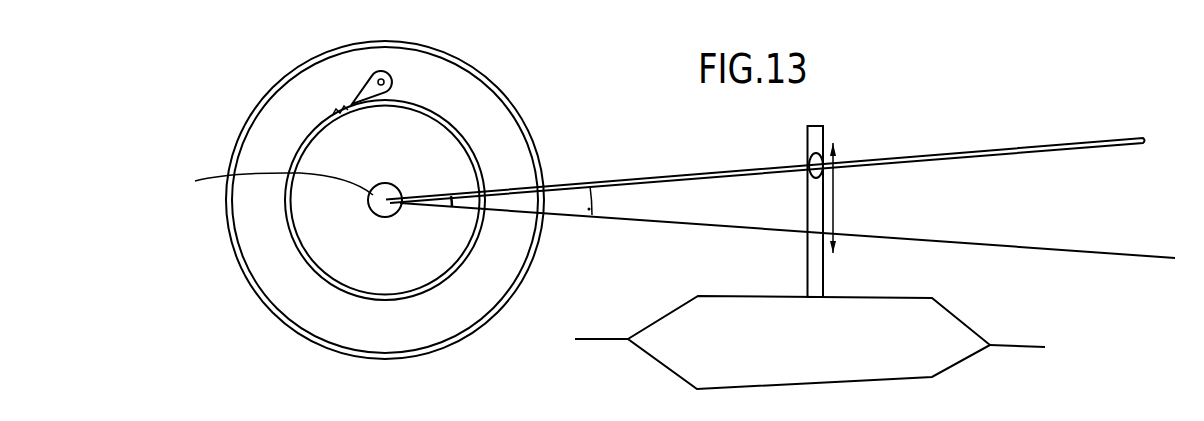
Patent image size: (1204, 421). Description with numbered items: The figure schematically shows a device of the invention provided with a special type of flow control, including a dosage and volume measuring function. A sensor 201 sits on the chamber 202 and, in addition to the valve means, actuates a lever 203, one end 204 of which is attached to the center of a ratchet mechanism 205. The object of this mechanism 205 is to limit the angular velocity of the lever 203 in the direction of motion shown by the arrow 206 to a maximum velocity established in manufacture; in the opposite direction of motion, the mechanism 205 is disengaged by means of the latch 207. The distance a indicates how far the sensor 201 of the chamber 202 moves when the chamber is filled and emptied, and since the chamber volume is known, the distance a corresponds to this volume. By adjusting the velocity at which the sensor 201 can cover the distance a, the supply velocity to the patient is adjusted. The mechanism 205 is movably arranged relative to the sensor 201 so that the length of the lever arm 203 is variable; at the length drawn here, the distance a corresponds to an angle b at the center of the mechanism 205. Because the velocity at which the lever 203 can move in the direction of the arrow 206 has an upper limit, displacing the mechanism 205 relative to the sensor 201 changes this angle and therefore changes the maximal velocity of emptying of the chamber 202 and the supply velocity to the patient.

The sensor 201 is at (807, 270).
The chamber 202 is at (954, 310).
The lever 203 is at (664, 176).
The end of lever 204 is at (260, 180).
The ratchet mechanism 205 is at (311, 60).
The arrow 206 is at (592, 198).
The latch 207 is at (394, 82).
The distance a is at (843, 198).
The angle b is at (448, 206).